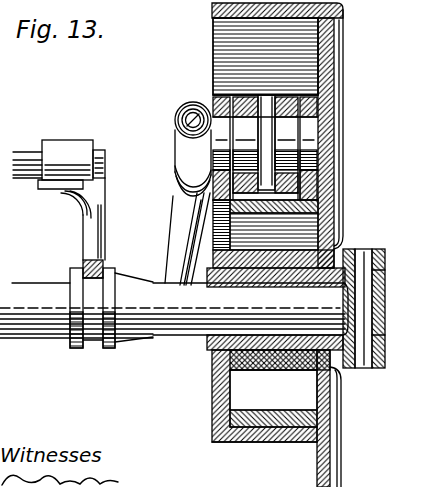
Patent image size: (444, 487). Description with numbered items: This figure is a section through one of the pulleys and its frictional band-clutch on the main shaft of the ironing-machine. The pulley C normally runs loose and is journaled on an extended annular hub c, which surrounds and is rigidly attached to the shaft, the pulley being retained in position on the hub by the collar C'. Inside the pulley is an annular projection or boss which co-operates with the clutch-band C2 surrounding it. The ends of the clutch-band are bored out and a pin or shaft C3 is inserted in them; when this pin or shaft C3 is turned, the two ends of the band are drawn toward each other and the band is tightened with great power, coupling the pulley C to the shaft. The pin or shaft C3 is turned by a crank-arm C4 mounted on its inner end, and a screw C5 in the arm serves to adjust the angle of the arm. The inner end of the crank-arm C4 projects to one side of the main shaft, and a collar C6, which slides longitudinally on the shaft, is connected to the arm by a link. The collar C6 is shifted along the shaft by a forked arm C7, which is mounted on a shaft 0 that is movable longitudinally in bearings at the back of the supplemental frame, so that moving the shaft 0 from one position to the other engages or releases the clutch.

The shaft 0 is at (105, 157).
The pulley C is at (287, 245).
The annular hub c is at (346, 270).
The pin or shaft C3 is at (318, 136).
The collar C' is at (314, 300).
The clutch-band C2 is at (284, 428).
The crank-arm C4 is at (178, 198).
The screw C5 is at (185, 117).
The collar C6 is at (118, 344).
The forked arm C7 is at (100, 243).